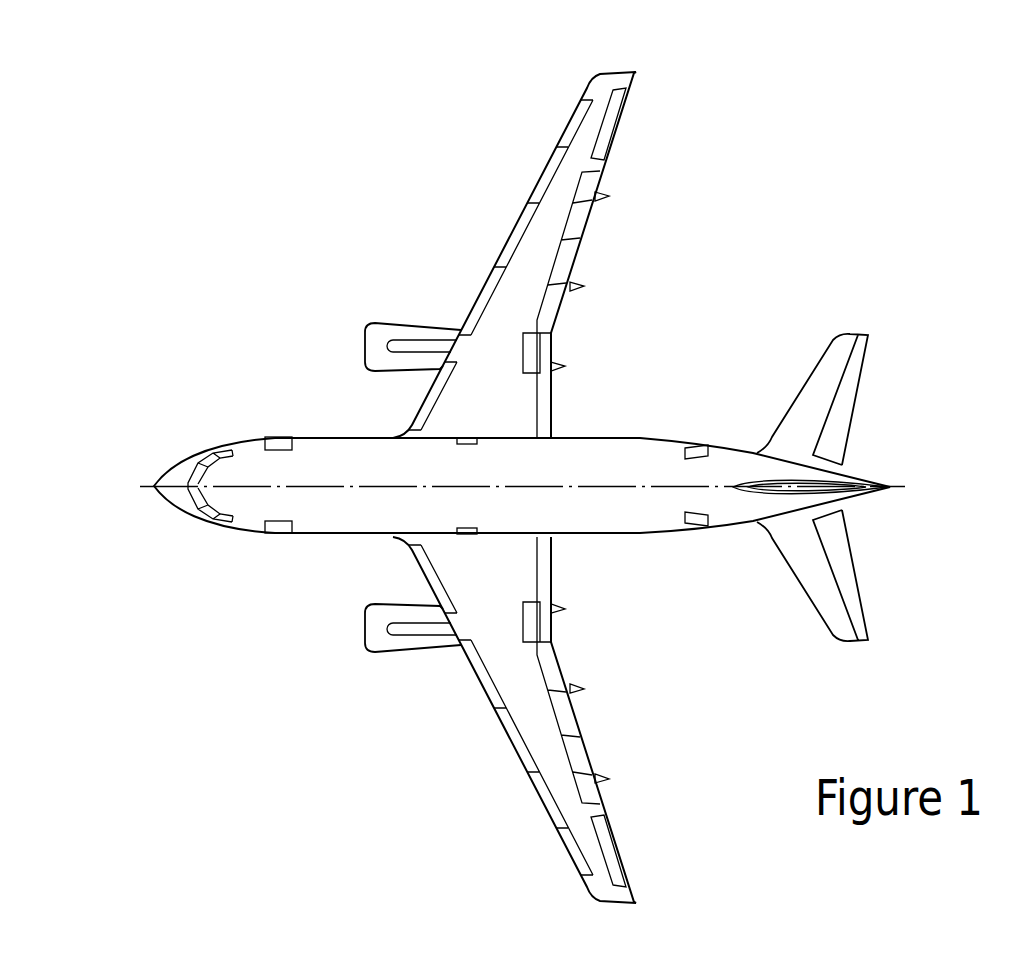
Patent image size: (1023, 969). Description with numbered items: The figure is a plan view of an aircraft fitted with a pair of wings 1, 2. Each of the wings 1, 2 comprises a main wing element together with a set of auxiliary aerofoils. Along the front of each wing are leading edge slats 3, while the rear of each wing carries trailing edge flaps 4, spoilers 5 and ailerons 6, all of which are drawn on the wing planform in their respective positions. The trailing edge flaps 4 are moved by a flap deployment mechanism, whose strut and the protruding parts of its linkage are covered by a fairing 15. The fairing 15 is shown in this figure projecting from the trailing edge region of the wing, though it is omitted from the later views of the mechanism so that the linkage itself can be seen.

The wing 1 is at (598, 75).
The wing 2 is at (613, 899).
The leading edge slat 3 is at (510, 250).
The trailing edge flap 4 is at (580, 250).
The spoiler 5 is at (548, 660).
The aileron 6 is at (618, 125).
The fairing 15 is at (583, 287).